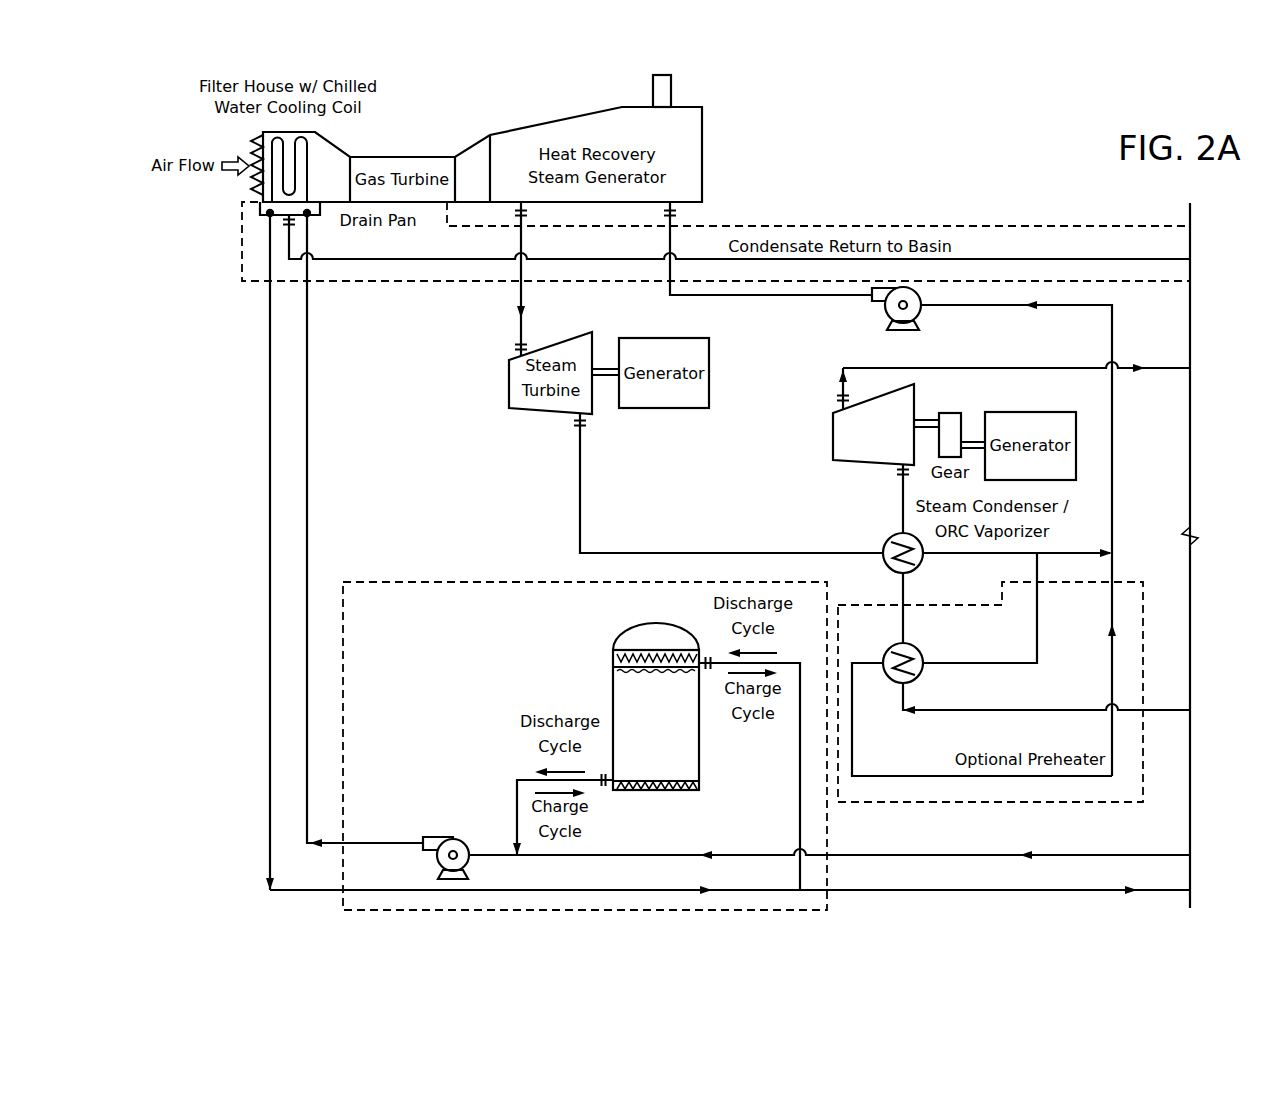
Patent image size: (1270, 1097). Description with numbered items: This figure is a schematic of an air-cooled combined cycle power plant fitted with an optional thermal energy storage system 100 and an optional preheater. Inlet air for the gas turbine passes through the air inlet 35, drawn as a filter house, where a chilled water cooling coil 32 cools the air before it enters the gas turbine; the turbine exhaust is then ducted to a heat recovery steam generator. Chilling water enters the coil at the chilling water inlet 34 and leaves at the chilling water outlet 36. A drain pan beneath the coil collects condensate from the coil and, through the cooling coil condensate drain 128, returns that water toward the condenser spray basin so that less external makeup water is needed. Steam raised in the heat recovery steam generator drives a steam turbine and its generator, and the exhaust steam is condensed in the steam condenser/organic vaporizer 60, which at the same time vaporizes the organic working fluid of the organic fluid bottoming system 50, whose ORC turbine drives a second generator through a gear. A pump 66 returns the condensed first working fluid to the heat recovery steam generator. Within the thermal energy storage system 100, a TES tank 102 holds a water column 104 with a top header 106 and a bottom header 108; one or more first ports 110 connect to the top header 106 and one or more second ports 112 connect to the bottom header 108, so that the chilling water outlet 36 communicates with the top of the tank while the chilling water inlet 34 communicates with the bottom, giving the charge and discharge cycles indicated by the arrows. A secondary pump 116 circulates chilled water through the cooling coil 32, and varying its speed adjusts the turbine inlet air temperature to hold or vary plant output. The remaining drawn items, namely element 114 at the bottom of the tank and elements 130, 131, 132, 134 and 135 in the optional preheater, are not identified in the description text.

The cooling coil 32 is at (290, 184).
The chilling water inlet 34 is at (307, 216).
The air inlet 35 is at (262, 140).
The chilling water outlet 36 is at (270, 216).
The organic fluid bottoming system 50 is at (833, 440).
The steam condenser/organic vaporizer 60 is at (889, 540).
The pump 66 is at (921, 312).
The thermal energy storage system 100 is at (485, 581).
The TES tank 102 is at (630, 634).
The water column 104 is at (625, 688).
The top header 106 is at (618, 660).
The bottom header 108 is at (676, 783).
The first ports 110 is at (707, 656).
The second ports 112 is at (603, 790).
The lower tank heat exchanger 114 is at (677, 792).
The secondary pump 116 is at (433, 860).
The cooling coil condensate drain 128 is at (289, 226).
The optional preheater heat exchanger 130 is at (920, 650).
The preheater outlet line 131 is at (905, 697).
The vaporizer to preheater line 132 is at (905, 595).
The preheater loop line 134 is at (865, 665).
The preheater bypass line 135 is at (1010, 664).